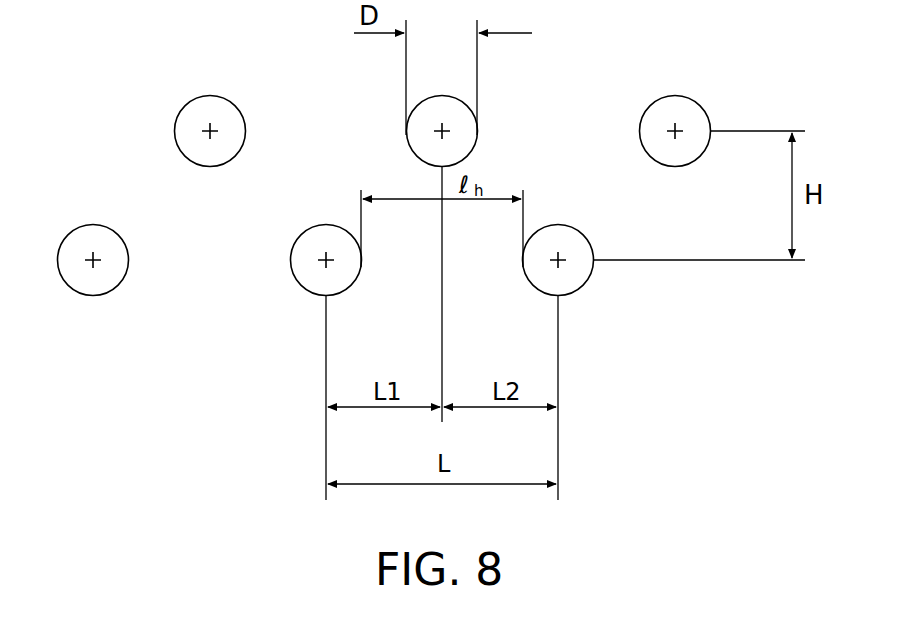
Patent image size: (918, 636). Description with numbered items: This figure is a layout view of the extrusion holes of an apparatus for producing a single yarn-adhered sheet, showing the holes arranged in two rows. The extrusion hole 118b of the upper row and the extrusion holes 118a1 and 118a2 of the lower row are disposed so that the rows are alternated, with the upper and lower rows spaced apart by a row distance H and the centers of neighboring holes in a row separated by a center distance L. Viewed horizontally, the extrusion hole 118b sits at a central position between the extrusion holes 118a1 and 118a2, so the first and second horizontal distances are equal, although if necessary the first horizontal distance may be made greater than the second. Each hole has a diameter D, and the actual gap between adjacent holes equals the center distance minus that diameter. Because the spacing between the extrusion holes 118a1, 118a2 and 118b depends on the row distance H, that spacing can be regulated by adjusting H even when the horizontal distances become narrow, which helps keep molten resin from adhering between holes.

The extrusion hole of the lower row 118a1 is at (322, 224).
The extrusion hole of the lower row 118a2 is at (651, 228).
The extrusion hole of the upper row 118b is at (470, 133).